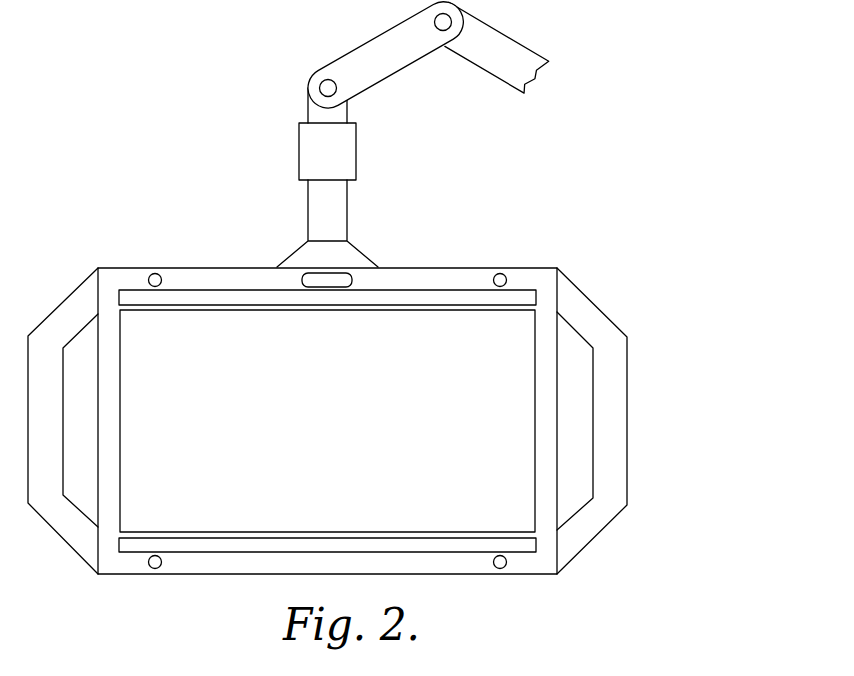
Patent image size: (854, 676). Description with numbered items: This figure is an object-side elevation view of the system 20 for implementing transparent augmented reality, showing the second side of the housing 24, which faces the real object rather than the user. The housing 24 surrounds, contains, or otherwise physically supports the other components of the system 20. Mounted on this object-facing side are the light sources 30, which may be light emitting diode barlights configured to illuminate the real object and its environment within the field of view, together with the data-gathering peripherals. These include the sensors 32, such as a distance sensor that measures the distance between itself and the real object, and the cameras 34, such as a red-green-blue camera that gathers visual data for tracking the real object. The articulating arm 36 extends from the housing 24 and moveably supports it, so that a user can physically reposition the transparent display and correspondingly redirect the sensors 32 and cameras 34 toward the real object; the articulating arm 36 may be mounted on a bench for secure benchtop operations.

The system 20 is at (628, 190).
The housing 24 is at (218, 567).
The light sources 30 is at (452, 298).
The sensors 32 is at (315, 282).
The cameras 34 is at (502, 274).
The articulating arm 36 is at (367, 62).